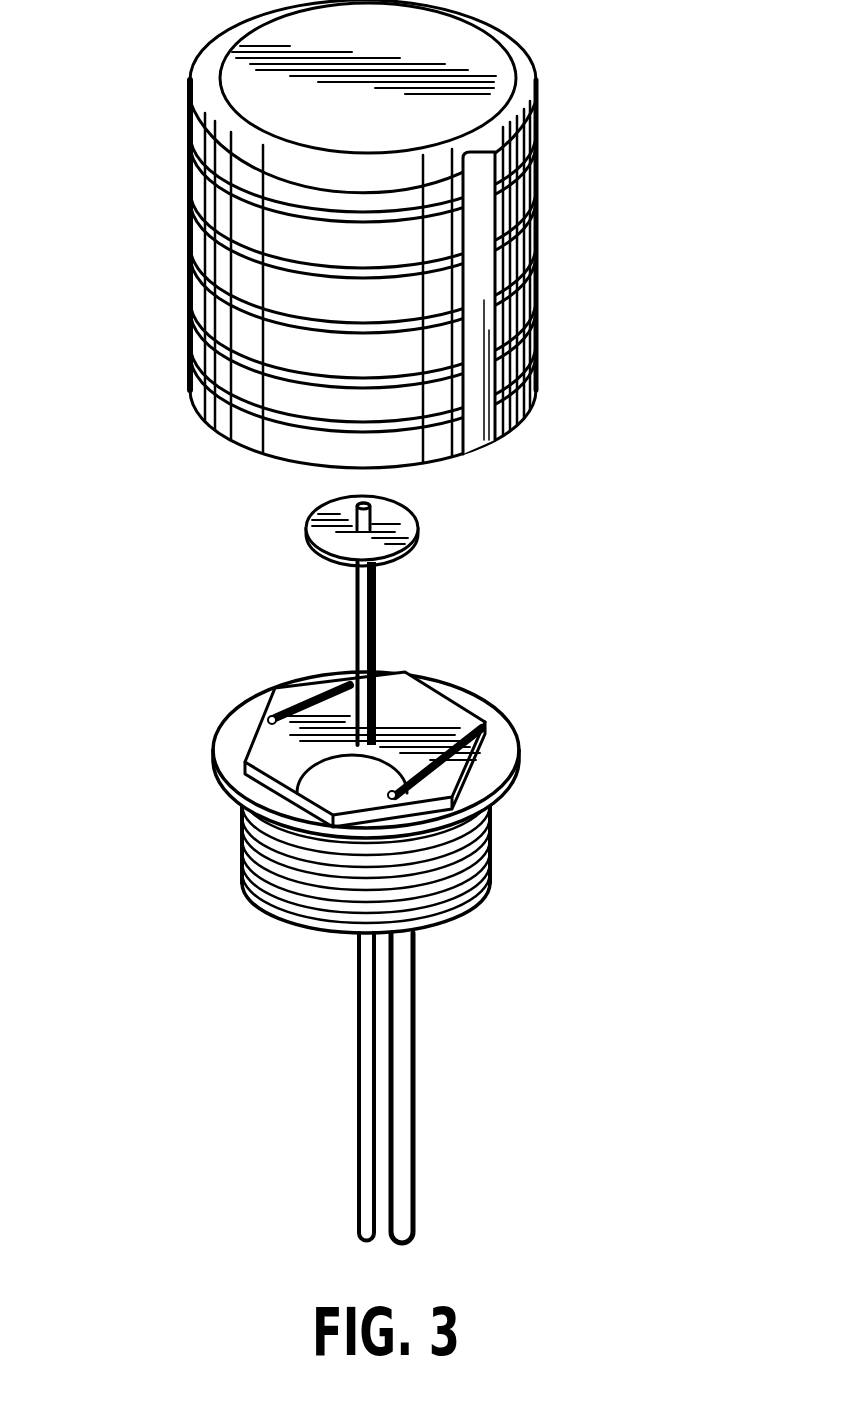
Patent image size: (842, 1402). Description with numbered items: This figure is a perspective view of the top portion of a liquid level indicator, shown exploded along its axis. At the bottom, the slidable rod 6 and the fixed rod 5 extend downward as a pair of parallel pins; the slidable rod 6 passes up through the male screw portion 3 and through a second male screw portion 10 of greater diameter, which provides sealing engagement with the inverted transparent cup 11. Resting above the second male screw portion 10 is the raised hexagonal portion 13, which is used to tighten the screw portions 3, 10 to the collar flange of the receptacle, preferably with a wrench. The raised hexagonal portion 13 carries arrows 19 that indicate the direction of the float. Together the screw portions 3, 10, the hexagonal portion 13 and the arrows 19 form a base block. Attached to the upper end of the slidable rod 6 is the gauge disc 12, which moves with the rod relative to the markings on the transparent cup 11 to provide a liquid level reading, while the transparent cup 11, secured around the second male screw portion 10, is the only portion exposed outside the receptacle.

The inverted transparent cup 11 is at (537, 168).
The gauge disc 12 is at (330, 560).
The raised hexagonal portion 13 is at (422, 707).
The arrows 19 is at (297, 792).
The second male screw portion 10 is at (522, 797).
The male screw portion 3 is at (475, 893).
The slidable rod 6 is at (357, 1062).
The fixed rod 5 is at (416, 1150).